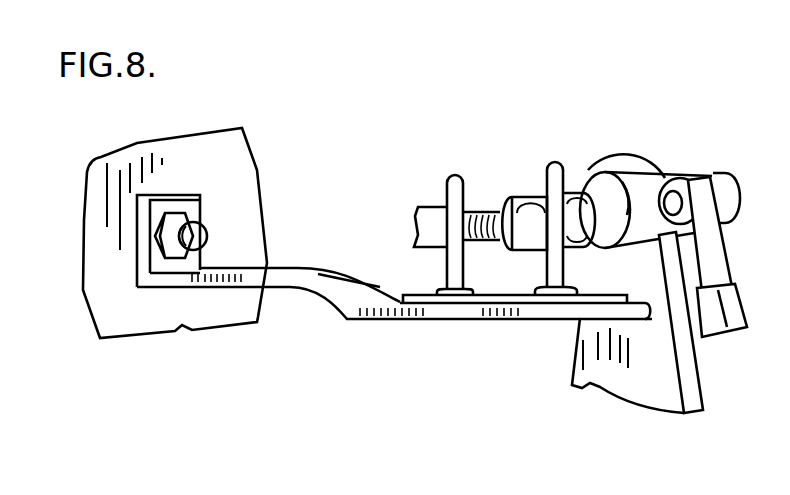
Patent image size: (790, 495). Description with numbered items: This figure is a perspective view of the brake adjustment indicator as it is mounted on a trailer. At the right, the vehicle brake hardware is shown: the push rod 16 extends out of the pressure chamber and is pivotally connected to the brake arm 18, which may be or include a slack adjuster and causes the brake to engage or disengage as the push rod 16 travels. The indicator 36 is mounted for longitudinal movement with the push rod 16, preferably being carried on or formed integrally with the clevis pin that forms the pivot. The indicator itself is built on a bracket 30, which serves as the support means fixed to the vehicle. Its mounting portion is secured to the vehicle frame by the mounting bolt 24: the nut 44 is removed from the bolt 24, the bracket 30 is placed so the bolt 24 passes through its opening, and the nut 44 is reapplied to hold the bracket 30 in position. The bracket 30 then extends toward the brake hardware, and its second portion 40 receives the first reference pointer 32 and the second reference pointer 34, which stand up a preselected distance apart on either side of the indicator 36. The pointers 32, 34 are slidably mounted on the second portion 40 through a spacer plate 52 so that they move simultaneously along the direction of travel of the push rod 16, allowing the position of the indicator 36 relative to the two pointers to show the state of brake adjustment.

The push rod 16 is at (427, 212).
The brake arm 18 is at (632, 386).
The mounting bolt 24 is at (203, 227).
The bracket 30 is at (270, 272).
The first reference pointer 32 is at (453, 177).
The second reference pointer 34 is at (558, 172).
The indicator 36 is at (533, 200).
The second portion 40 is at (427, 313).
The nut 44 is at (180, 212).
The plate 52 is at (463, 323).